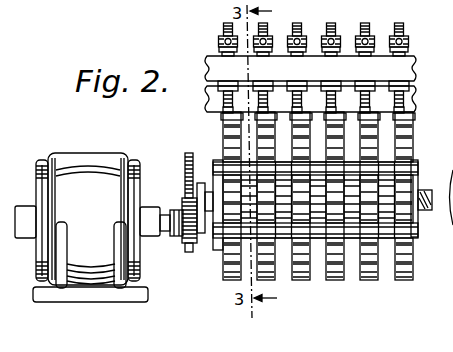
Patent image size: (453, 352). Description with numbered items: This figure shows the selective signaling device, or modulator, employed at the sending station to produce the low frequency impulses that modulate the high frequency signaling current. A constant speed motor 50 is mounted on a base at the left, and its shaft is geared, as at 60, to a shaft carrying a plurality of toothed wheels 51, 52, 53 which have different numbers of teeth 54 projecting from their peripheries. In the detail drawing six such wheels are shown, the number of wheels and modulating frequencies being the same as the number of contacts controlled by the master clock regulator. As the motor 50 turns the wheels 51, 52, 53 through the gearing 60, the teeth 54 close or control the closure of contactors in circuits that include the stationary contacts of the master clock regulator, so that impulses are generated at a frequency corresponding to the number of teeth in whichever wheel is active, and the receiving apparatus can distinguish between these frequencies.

The constant speed motor 50 is at (99, 227).
The toothed wheel 51 is at (314, 223).
The toothed wheel 52 is at (277, 281).
The toothed wheel 53 is at (313, 280).
The teeth 54 is at (262, 146).
The gearing 60 is at (184, 197).